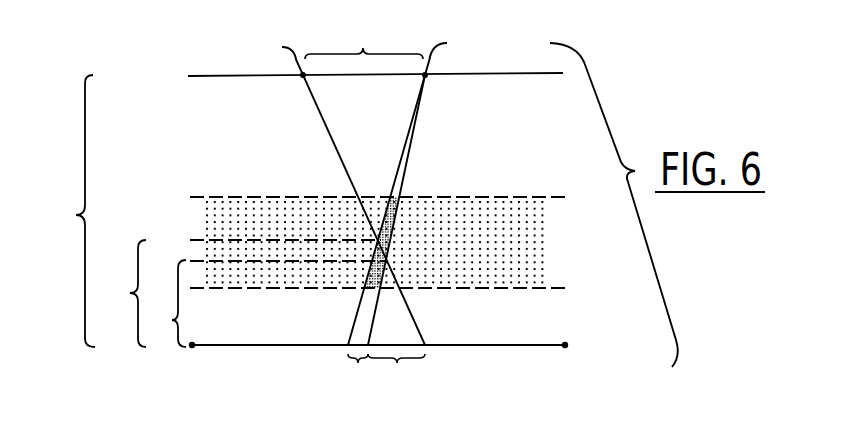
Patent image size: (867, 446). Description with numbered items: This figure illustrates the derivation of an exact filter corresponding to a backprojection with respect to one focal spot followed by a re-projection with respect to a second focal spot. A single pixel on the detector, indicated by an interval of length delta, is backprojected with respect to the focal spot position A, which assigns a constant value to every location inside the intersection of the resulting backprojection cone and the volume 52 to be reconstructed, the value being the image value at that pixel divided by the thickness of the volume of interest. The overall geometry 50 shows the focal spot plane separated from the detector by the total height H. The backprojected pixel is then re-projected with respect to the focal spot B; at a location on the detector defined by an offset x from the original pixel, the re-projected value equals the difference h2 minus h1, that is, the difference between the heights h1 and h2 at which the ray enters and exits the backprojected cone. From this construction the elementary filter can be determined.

The imaging geometry / scanned volume 50 is at (359, 205).
The volume to be reconstructed 52 is at (540, 252).
The focal spot position A is at (404, 191).
The focal spot B is at (349, 191).
The source-to-detector height H is at (77, 211).
The height h1 is at (168, 303).
The height h2 is at (123, 293).